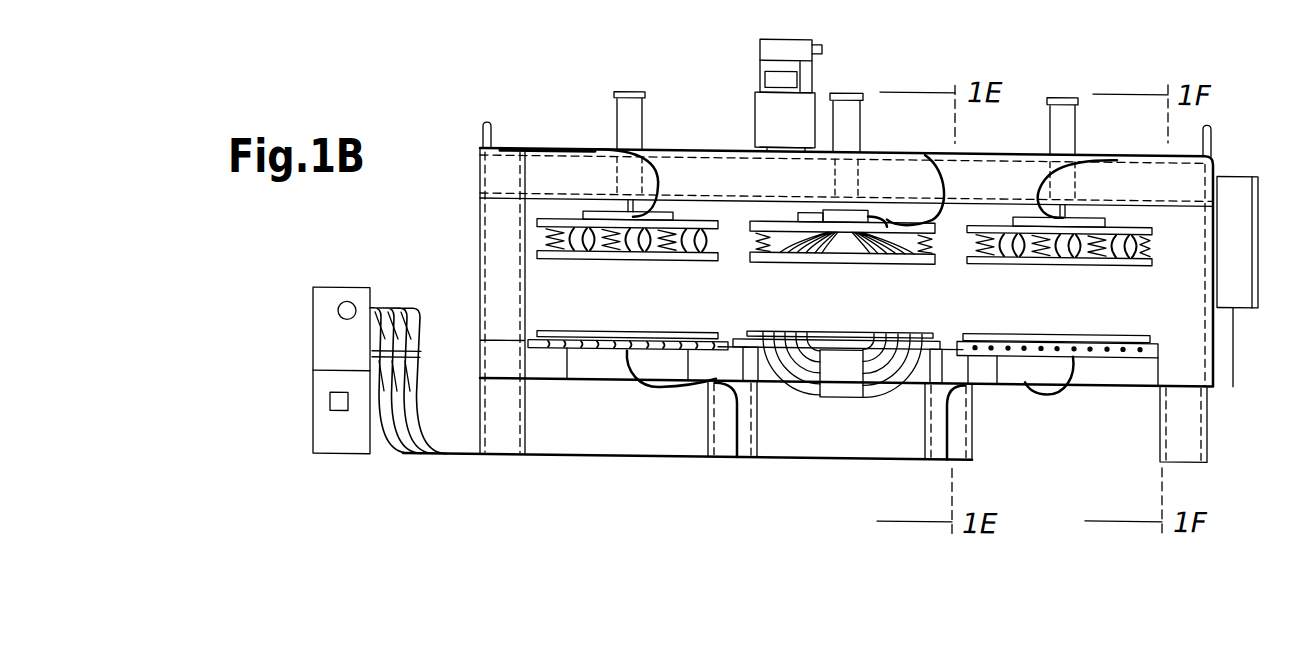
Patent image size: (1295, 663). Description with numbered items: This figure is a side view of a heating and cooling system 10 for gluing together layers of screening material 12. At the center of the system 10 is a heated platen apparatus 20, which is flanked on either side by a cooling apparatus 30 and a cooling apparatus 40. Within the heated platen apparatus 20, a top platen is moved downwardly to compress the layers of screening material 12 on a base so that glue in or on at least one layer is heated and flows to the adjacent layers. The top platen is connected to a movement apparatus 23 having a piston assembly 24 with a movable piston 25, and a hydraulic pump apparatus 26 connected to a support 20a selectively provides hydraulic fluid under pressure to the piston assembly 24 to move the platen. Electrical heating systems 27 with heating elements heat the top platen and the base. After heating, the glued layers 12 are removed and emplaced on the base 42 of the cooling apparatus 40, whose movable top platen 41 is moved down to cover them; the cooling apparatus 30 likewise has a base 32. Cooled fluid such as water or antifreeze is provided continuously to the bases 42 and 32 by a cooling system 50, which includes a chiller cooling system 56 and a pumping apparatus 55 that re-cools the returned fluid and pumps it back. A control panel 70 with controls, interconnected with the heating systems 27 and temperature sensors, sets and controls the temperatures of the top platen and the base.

The system 10 is at (498, 102).
The layers of screening material 12 is at (787, 329).
The heated platen apparatus 20 is at (928, 155).
The support 20a is at (547, 172).
The movement apparatus 23 is at (775, 105).
The piston assembly 24 is at (847, 118).
The movable piston 25 is at (810, 214).
The hydraulic pump apparatus 26 is at (787, 52).
The electrical heating systems 27 is at (888, 213).
The cooling apparatus 30 is at (688, 215).
The base 32 is at (567, 332).
The cooling apparatus 40 is at (1117, 210).
The movable top platen 41 is at (987, 212).
The base 42 is at (1148, 335).
The cooling system 50 is at (325, 340).
The pumping apparatus 55 is at (328, 404).
The cooling system 56 is at (349, 302).
The control panel 70 is at (1242, 194).